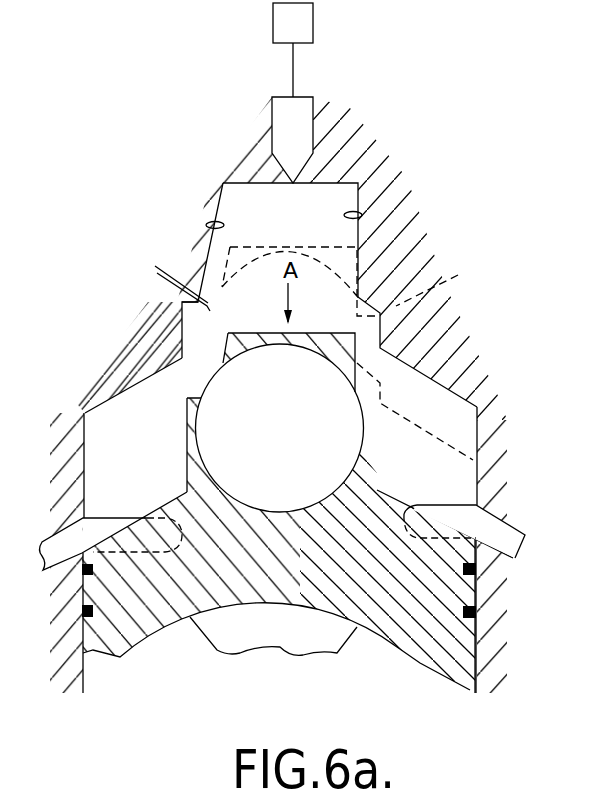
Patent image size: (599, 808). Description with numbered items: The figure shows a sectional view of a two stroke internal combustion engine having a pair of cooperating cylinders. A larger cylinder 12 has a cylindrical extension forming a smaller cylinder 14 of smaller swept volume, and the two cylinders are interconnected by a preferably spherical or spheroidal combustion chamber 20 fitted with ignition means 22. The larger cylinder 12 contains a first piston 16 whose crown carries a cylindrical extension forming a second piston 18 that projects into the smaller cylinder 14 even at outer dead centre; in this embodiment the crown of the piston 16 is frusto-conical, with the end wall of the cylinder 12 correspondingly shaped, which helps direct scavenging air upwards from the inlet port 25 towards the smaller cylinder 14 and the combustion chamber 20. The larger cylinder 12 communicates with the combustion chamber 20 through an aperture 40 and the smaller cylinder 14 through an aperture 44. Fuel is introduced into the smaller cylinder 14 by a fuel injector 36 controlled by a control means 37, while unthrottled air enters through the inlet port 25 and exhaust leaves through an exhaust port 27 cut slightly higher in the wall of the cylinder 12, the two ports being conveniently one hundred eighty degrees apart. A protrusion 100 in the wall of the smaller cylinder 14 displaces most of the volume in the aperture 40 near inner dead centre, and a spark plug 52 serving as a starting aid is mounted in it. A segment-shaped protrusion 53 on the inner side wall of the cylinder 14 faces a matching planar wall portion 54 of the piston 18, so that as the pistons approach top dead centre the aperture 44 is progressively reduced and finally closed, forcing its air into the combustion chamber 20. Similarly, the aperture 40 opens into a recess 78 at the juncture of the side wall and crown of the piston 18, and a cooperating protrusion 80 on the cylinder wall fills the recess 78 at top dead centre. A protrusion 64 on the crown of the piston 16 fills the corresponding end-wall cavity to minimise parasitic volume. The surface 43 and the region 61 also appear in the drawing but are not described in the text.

The larger cylinder 12 is at (453, 420).
The smaller cylinder 14 is at (223, 183).
The first piston 16 is at (438, 475).
The second piston 18 is at (268, 243).
The combustion chamber 20 is at (272, 452).
The ignition means 22 is at (193, 427).
The inlet port 25 is at (65, 545).
The exhaust port 27 is at (493, 533).
The fuel injector 36 is at (290, 125).
The control means 37 is at (292, 25).
The aperture 40 is at (212, 367).
The inclined surface 43 is at (393, 347).
The aperture 44 is at (323, 458).
The spark plug 52 is at (168, 283).
The protrusion 53 is at (362, 222).
The wall portion 54 is at (357, 353).
The arm 61 is at (155, 368).
The protrusion 64 is at (178, 520).
The recess 78 is at (227, 345).
The protrusion 80 is at (213, 224).
The protrusion 100 is at (185, 299).